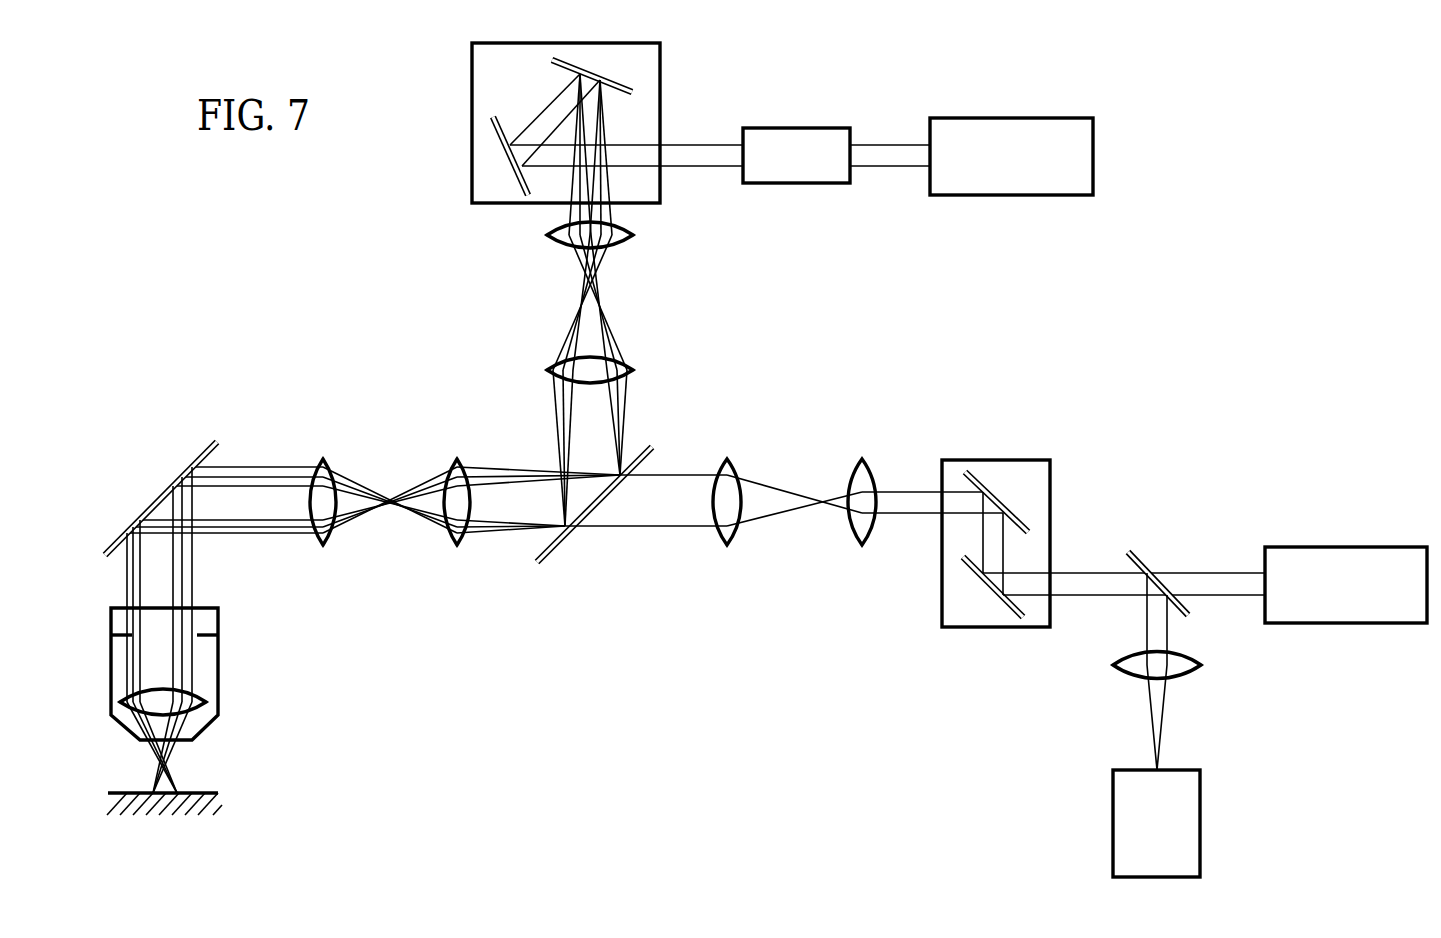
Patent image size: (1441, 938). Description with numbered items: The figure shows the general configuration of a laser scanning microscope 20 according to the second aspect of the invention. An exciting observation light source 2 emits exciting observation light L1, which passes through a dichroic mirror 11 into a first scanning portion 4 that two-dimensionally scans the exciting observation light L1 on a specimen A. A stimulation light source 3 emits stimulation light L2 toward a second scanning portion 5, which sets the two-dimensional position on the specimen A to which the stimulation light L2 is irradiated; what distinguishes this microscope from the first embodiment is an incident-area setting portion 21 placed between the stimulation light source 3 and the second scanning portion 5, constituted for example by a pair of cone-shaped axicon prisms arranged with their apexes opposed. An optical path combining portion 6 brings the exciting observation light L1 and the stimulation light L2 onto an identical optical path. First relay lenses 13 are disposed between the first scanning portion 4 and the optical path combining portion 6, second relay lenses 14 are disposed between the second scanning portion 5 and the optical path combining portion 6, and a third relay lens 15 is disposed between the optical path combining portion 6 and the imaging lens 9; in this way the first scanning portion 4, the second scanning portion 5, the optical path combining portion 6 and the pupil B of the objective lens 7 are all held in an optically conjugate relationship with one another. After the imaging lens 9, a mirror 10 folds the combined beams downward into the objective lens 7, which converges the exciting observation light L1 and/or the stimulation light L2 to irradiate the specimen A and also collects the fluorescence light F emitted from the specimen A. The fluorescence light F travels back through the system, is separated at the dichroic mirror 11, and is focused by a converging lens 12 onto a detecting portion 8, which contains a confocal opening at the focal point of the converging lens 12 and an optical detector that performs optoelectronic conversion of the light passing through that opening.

The exciting observation light source 2 is at (1333, 547).
The stimulation light source 3 is at (1010, 118).
The first scanning portion 4 is at (942, 605).
The second scanning portion 5 is at (660, 75).
The optical path combining portion 6 is at (555, 548).
The objective lens 7 is at (206, 700).
The detecting portion 8 is at (1200, 820).
The imaging lens 9 is at (323, 459).
The mirror 10 is at (200, 450).
The dichroic mirror 11 is at (1190, 615).
The converging lens 12 is at (1113, 665).
The first relay lenses 13 is at (703, 445).
The second relay lenses 14 is at (648, 220).
The third relay lens 15 is at (457, 459).
The laser scanning microscope 20 is at (1215, 200).
The incident-area setting portion 21 is at (800, 128).
The specimen A is at (205, 793).
The pupil B is at (222, 633).
The fluorescence light F is at (1160, 725).
The exciting observation light L1 is at (1215, 573).
The stimulation light L2 is at (888, 145).